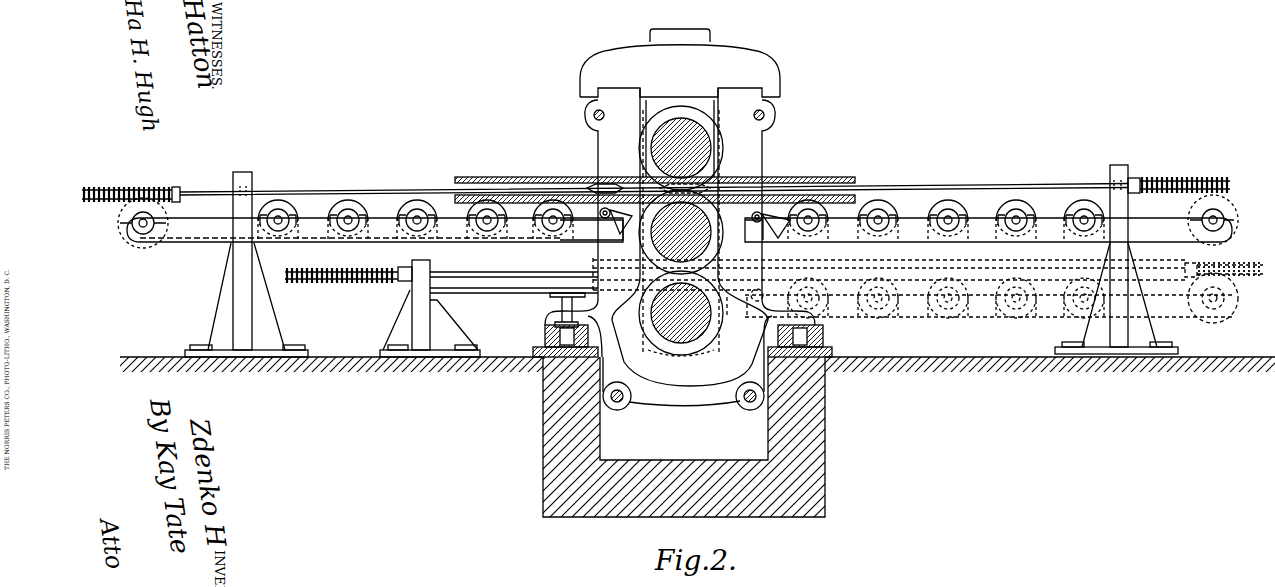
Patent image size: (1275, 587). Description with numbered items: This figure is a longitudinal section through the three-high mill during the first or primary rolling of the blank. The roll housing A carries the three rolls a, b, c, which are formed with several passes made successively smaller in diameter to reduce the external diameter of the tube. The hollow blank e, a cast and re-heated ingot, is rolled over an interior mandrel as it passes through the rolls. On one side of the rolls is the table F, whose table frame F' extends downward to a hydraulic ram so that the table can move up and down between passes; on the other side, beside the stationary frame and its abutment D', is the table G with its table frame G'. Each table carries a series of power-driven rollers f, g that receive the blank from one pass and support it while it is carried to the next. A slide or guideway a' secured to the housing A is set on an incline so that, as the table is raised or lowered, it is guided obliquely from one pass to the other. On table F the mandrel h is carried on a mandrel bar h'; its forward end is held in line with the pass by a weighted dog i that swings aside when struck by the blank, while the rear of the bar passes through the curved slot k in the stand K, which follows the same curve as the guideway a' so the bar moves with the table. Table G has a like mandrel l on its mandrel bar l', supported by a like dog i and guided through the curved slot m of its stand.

The roll housing A is at (682, 230).
The roll a is at (665, 230).
The roll b is at (646, 238).
The roll c is at (681, 355).
The blank e is at (508, 177).
The mandrel l is at (600, 172).
The mandrel bar l' is at (440, 184).
The mandrel h is at (701, 171).
The mandrel bar h' is at (914, 176).
The curved slot m is at (252, 192).
The stand K is at (1120, 165).
The curved slot k is at (1110, 185).
The table G is at (375, 242).
The table frame G' is at (350, 250).
The rollers g is at (290, 212).
The table frame F' is at (988, 221).
The rollers f is at (1000, 214).
The guideway a' is at (514, 289).
The frame abutment D' is at (430, 308).
The weighted dog i is at (755, 238).